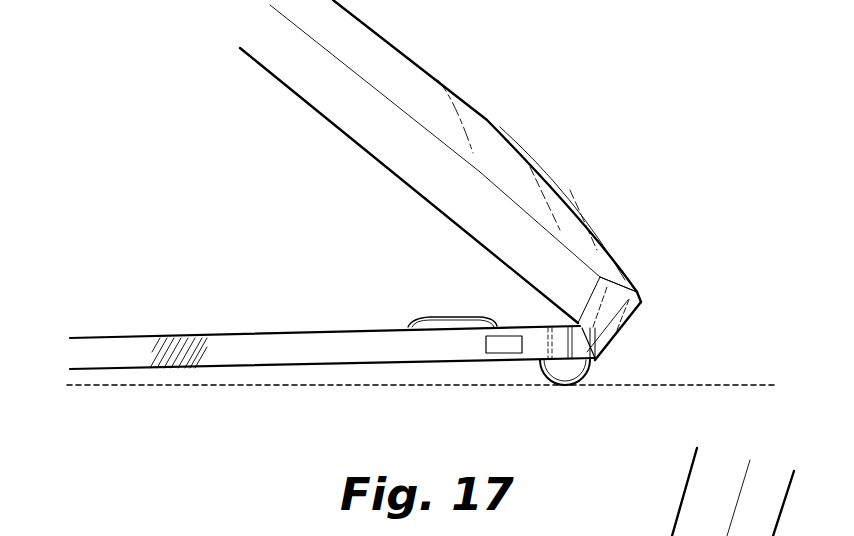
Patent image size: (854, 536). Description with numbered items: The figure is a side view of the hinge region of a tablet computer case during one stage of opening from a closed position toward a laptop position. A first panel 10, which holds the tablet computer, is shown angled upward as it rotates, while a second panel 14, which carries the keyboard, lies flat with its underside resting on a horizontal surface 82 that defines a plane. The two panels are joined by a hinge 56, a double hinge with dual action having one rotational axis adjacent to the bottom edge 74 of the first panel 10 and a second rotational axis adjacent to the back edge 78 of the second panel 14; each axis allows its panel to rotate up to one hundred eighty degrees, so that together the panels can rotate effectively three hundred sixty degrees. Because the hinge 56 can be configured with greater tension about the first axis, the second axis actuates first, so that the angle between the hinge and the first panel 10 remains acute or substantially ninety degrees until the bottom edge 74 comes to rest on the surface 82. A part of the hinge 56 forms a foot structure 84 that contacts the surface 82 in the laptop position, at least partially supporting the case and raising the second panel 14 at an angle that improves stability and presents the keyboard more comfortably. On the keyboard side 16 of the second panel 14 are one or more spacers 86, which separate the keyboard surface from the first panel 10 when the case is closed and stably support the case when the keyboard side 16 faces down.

The first panel 10 is at (438, 80).
The second panel 14 is at (237, 350).
The keyboard side 16 is at (325, 330).
The spacers 86 is at (447, 320).
The bottom edge 74 is at (637, 292).
The hinge 56 is at (608, 343).
The back edge 78 is at (597, 357).
The foot structure 84 is at (568, 371).
The horizontal surface 82 is at (727, 383).